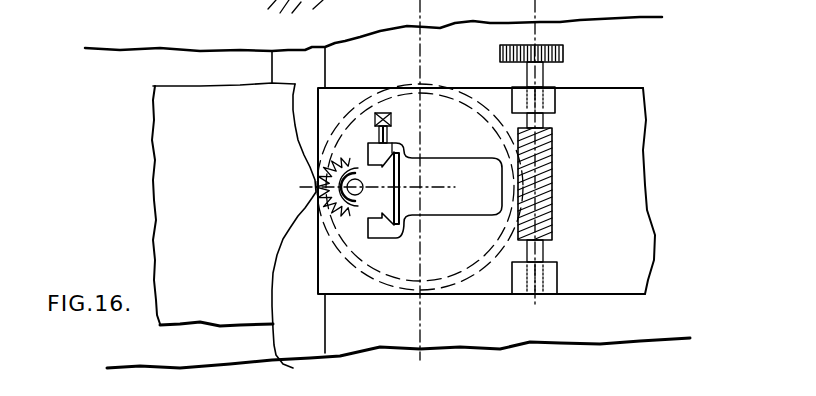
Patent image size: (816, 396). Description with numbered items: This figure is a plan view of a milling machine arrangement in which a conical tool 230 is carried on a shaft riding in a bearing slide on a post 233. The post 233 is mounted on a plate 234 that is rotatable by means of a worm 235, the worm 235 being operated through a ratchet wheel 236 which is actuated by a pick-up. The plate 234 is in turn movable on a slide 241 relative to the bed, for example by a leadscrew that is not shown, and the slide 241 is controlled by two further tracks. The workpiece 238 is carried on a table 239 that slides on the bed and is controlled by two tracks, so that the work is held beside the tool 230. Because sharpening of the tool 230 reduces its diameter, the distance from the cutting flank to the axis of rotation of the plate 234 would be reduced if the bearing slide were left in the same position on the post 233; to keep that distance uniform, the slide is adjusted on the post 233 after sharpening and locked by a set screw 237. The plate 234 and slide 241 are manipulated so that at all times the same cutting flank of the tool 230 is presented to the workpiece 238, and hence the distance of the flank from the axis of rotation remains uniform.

The conical tool 230 is at (342, 163).
The post 233 is at (428, 200).
The plate 234 is at (483, 231).
The worm 235 is at (552, 157).
The ratchet wheel 236 is at (563, 50).
The set screw 237 is at (392, 113).
The workpiece 238 is at (183, 145).
The table 239 is at (200, 65).
The slide 241 is at (632, 238).